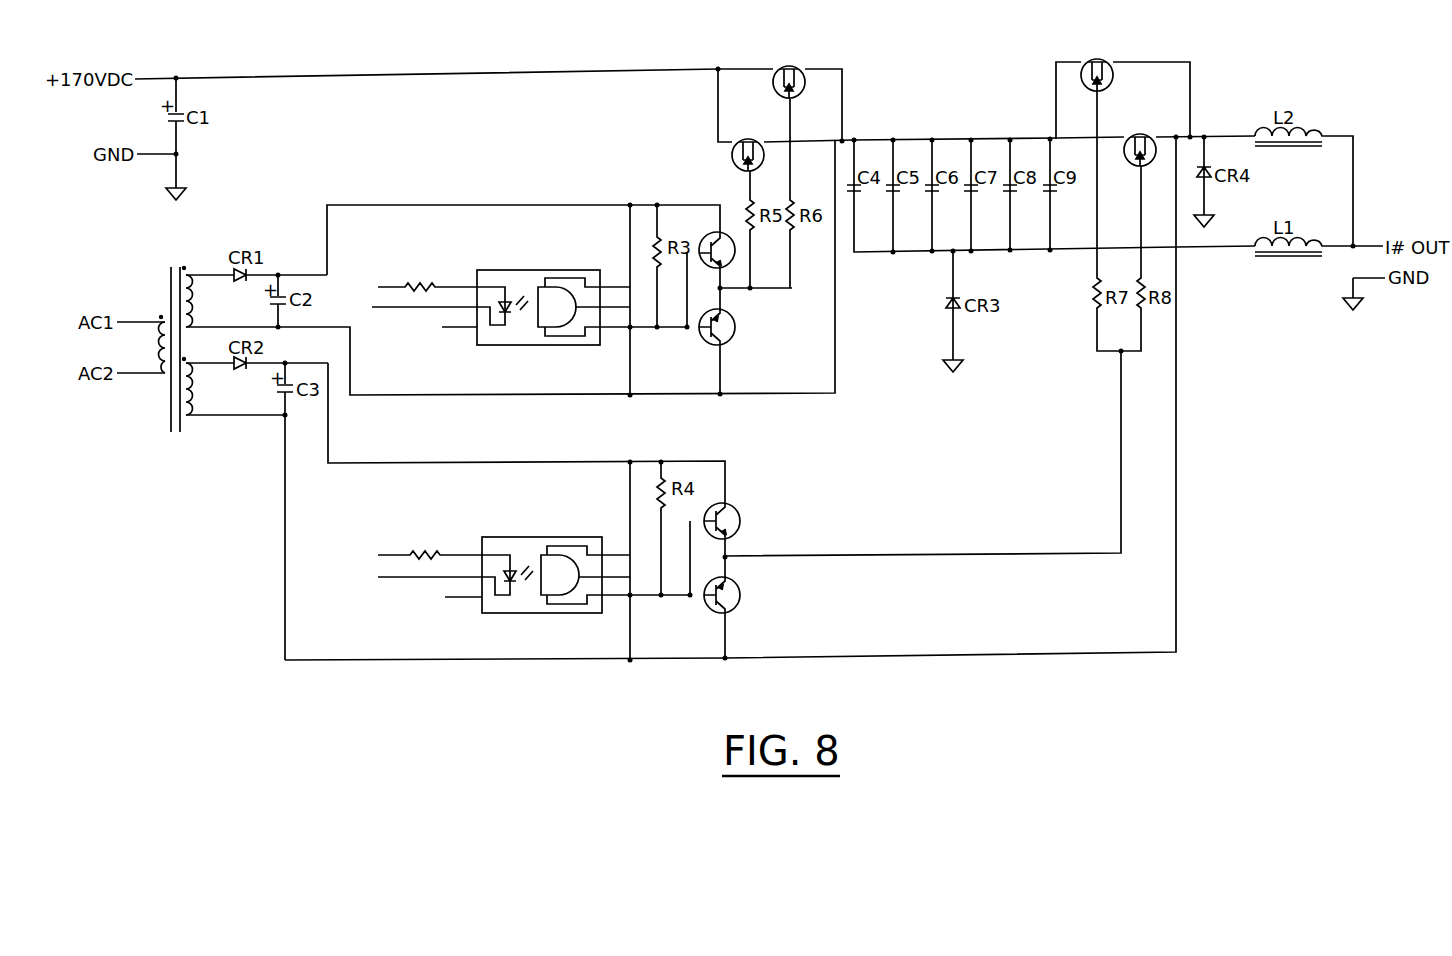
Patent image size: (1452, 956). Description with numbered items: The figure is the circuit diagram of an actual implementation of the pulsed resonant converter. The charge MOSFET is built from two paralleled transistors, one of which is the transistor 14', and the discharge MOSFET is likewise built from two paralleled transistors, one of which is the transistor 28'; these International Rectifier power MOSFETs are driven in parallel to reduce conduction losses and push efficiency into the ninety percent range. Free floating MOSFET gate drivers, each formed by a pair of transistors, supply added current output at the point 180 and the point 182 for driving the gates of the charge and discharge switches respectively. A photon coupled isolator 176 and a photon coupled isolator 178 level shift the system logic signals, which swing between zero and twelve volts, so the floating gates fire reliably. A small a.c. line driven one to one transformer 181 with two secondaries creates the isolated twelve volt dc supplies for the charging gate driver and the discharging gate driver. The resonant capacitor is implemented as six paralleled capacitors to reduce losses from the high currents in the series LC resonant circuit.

The charge MOSFET transistor 14' is at (740, 131).
The discharge MOSFET transistor 28' is at (1124, 73).
The photon coupled isolator 176 is at (533, 270).
The photon coupled isolator 178 is at (528, 537).
The gate driver output point 180 is at (730, 292).
The one to one transformer 181 is at (173, 435).
The gate driver output point 182 is at (738, 553).